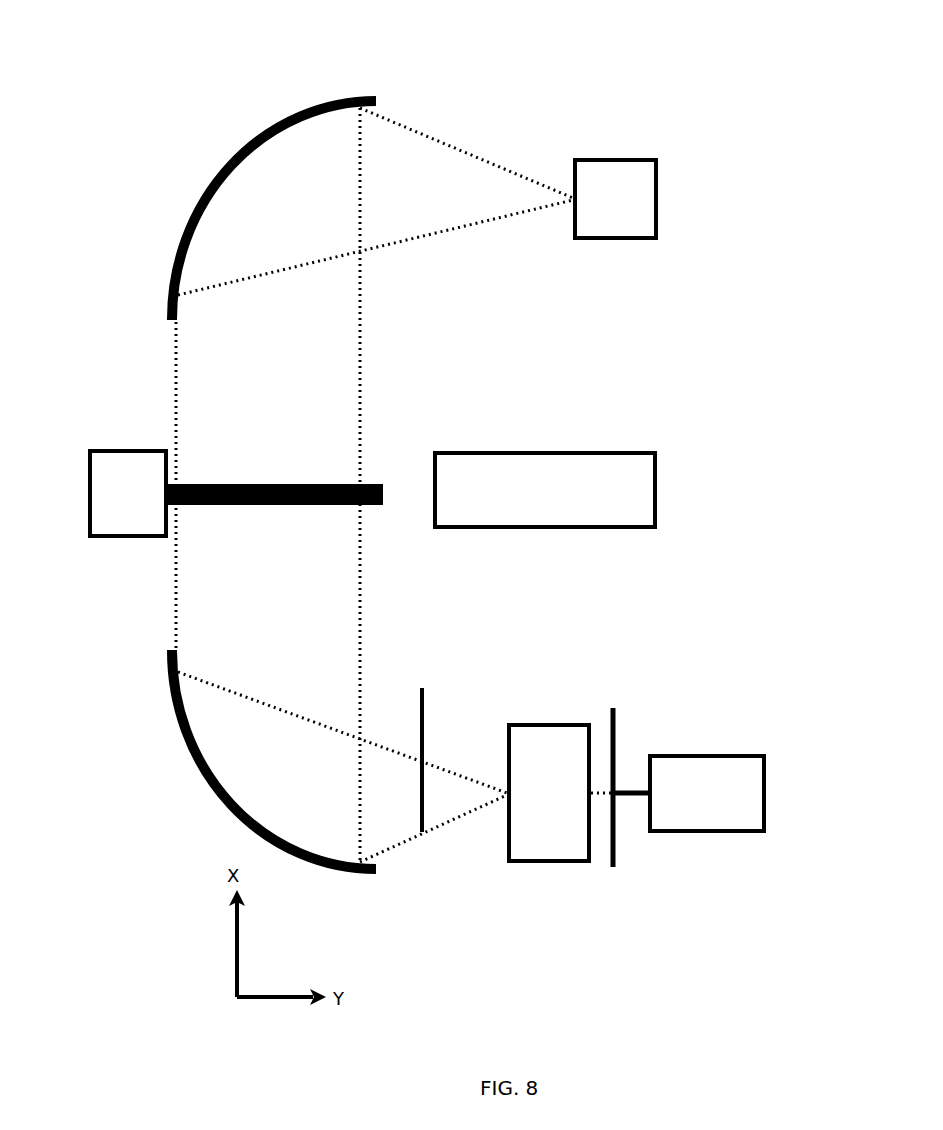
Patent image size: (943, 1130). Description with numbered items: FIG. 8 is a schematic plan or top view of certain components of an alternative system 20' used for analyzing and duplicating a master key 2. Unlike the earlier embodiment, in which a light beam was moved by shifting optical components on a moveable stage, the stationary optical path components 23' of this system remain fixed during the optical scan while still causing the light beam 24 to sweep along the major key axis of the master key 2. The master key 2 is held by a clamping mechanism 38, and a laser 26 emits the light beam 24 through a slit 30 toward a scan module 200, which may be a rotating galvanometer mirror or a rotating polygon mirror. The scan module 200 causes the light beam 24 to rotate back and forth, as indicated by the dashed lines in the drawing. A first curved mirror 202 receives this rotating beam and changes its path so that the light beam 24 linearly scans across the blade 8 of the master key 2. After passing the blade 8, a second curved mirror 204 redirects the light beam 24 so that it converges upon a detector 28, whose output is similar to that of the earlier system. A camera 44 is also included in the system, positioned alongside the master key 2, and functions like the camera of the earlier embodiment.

The alternative system 20' is at (622, 36).
The stationary optical path components 23' is at (712, 83).
The second curved mirror 204 is at (250, 143).
The first curved mirror 202 is at (180, 728).
The detector 28 is at (660, 200).
The clamping mechanism 38 is at (128, 452).
The master key 2 is at (262, 487).
The blade 8 is at (310, 504).
The camera 44 is at (525, 450).
The light beam 24 is at (403, 755).
The scan module 200 is at (520, 722).
The slit 30 is at (614, 708).
The laser 26 is at (707, 754).